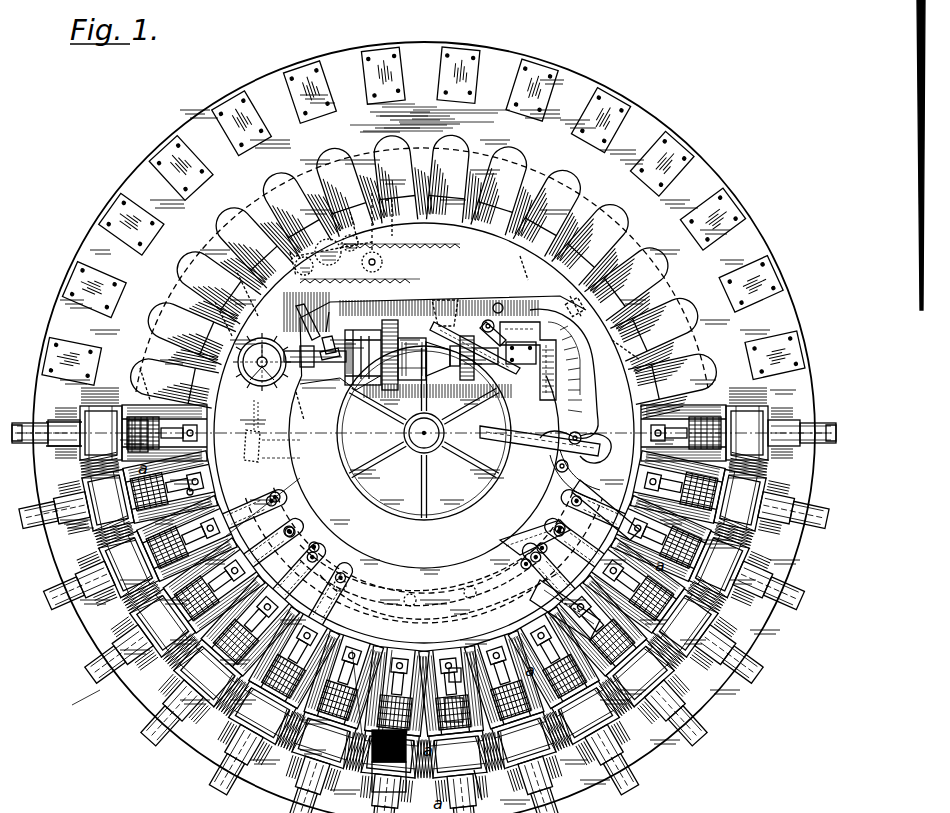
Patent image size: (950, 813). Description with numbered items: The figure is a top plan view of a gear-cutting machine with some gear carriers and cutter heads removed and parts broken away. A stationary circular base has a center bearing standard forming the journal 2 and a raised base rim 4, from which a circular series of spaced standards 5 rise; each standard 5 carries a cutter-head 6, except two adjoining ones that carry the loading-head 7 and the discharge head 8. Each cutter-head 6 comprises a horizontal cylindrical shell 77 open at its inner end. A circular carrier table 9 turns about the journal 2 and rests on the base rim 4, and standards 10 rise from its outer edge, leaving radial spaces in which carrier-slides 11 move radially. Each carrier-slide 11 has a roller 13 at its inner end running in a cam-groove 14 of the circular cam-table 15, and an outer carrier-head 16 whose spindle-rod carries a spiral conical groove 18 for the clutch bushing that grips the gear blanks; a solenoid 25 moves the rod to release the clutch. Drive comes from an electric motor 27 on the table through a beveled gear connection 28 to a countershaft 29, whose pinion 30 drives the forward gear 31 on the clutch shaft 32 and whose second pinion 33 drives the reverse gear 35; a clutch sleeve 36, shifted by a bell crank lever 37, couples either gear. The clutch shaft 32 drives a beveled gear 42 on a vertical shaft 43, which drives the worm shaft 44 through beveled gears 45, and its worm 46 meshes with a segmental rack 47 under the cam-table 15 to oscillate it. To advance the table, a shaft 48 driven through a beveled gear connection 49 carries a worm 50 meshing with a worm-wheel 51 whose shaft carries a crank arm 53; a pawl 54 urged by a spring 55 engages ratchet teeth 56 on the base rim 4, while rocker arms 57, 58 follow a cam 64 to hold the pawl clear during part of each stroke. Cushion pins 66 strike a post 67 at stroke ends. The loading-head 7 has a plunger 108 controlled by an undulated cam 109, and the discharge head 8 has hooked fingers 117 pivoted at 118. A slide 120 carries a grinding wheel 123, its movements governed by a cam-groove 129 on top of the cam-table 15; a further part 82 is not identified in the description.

The journal 2 is at (826, 440).
The base rim 4 is at (698, 184).
The standards 5 is at (778, 412).
The cutter-head 6 is at (232, 720).
The loading-head 7 is at (710, 742).
The discharge head 8 is at (370, 760).
The carrier table 9 is at (540, 360).
The standards 10 is at (520, 220).
The carrier-slide 11 is at (228, 540).
The roller 13 is at (262, 502).
The cam-groove 14 is at (356, 470).
The cam-table 15 is at (424, 433).
The carrier-head 16 is at (462, 694).
The spiral conical groove 18 is at (464, 710).
The solenoid 25 is at (186, 500).
The electric motor 27 is at (552, 404).
The beveled gear connection 28 is at (520, 326).
The countershaft 29 is at (466, 326).
The pinion 30 is at (496, 302).
The gear 31 is at (476, 364).
The clutch shaft 32 is at (330, 386).
The second pinion 33 is at (392, 326).
The second gear 35 is at (376, 398).
The clutch sleeve 36 is at (452, 392).
The bell crank lever 37 is at (424, 360).
The beveled gear 42 is at (258, 316).
The vertical shaft 43 is at (230, 336).
The worm shaft 44 is at (315, 341).
The beveled gears 45 is at (242, 370).
The worm 46 is at (252, 448).
The segmental rack 47 is at (288, 452).
The shaft 48 is at (300, 305).
The beveled gear connection 49 is at (332, 334).
The worm 50 is at (292, 264).
The worm-wheel 51 is at (372, 250).
The crank arm 53 is at (318, 236).
The pawl 54 is at (384, 240).
The spring 55 is at (365, 326).
The ratchet teeth 56 is at (425, 275).
The rocker arm 57 is at (350, 210).
The rocker arm 58 is at (404, 286).
The cam 64 is at (450, 256).
The cushion pins 66 is at (622, 346).
The post 67 is at (614, 298).
The cylindrical shell 77 is at (424, 600).
The tool shaft 82 is at (48, 528).
The plunger 108 is at (486, 788).
The undulated cam 109 is at (138, 378).
The hooked fingers 117 is at (397, 692).
The pivot 118 is at (374, 790).
The slide 120 is at (570, 628).
The grinding wheel 123 is at (584, 568).
The cam-groove 129 is at (492, 546).